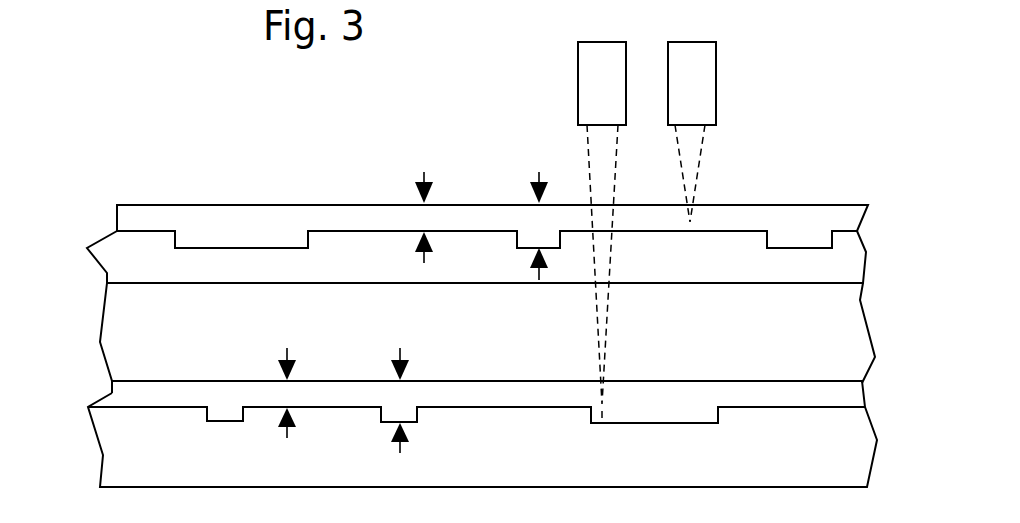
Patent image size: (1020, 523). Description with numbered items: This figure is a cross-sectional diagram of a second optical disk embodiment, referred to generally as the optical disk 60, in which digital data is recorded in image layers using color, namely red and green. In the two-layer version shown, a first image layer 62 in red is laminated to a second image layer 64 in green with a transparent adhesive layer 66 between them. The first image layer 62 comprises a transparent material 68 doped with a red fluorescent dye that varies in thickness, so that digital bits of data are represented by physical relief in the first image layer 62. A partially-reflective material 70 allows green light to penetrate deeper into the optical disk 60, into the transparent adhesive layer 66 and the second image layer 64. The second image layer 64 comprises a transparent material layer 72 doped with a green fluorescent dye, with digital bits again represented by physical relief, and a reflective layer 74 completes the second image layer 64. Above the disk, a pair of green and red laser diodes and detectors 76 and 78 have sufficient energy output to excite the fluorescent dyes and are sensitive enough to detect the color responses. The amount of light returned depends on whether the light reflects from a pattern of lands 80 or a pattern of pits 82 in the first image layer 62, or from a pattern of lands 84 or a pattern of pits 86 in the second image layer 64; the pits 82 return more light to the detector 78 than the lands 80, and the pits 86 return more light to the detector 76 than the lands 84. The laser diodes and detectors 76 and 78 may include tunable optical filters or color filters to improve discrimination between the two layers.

The optical disk 60 is at (215, 96).
The first image layer 62 is at (72, 200).
The second image layer 64 is at (62, 378).
The transparent adhesive layer 66 is at (734, 345).
The transparent material 68 is at (815, 231).
The partially-reflective material 70 is at (699, 269).
The transparent material layer 72 is at (667, 414).
The reflective layer 74 is at (691, 464).
The green laser diode and detector 76 is at (578, 58).
The red laser diode and detector 78 is at (716, 75).
The lands 80 is at (415, 209).
The pits 82 is at (528, 218).
The lands 84 is at (277, 384).
The pits 86 is at (389, 392).